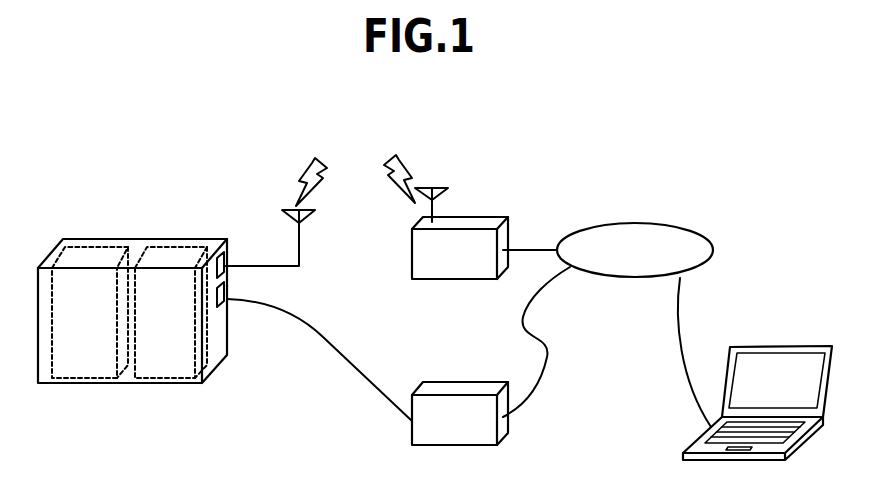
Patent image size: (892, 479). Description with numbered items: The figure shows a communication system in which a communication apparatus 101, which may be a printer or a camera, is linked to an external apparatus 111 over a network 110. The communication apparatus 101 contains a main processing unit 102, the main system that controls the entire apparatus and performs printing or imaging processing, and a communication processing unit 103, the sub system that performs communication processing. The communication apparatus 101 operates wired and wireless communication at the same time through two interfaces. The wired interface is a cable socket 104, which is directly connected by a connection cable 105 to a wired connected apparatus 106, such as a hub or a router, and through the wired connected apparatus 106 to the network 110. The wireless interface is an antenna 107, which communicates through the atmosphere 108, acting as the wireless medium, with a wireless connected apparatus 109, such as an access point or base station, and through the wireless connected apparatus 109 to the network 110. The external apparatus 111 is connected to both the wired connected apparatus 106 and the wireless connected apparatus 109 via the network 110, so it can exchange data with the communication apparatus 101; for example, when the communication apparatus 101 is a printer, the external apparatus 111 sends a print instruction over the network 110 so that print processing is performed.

The communication apparatus 101 is at (105, 237).
The main processing unit 102 is at (80, 382).
The communication processing unit 103 is at (160, 382).
The cable socket 104 is at (227, 297).
The connection cable 105 is at (323, 339).
The wired connected apparatus 106 is at (461, 382).
The antenna 107 is at (300, 245).
The atmosphere 108 is at (355, 173).
The wireless connected apparatus 109 is at (482, 216).
The network 110 is at (638, 222).
The external apparatus 111 is at (779, 346).